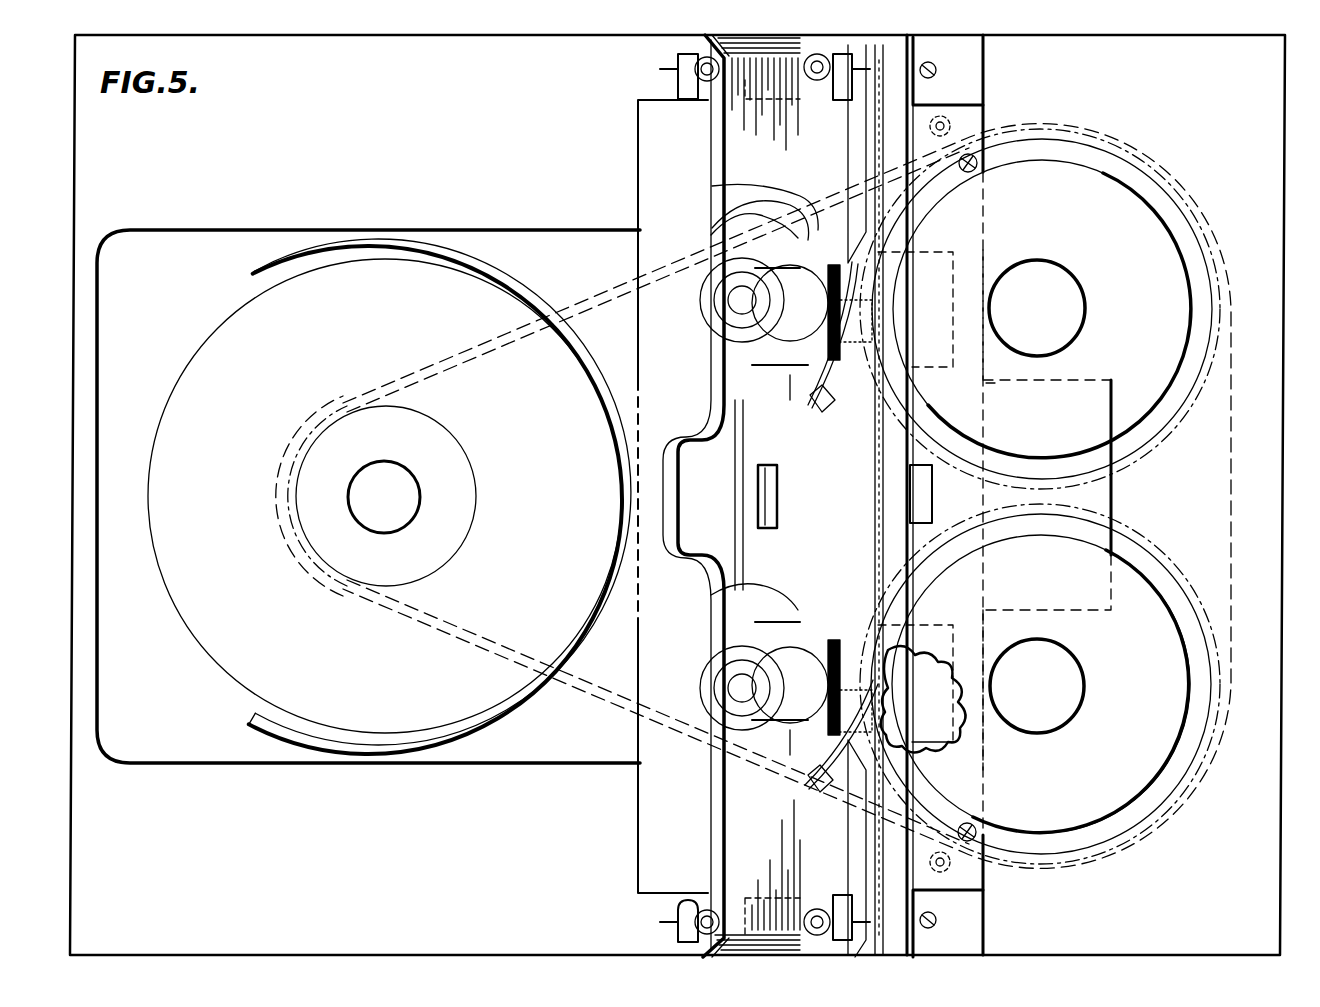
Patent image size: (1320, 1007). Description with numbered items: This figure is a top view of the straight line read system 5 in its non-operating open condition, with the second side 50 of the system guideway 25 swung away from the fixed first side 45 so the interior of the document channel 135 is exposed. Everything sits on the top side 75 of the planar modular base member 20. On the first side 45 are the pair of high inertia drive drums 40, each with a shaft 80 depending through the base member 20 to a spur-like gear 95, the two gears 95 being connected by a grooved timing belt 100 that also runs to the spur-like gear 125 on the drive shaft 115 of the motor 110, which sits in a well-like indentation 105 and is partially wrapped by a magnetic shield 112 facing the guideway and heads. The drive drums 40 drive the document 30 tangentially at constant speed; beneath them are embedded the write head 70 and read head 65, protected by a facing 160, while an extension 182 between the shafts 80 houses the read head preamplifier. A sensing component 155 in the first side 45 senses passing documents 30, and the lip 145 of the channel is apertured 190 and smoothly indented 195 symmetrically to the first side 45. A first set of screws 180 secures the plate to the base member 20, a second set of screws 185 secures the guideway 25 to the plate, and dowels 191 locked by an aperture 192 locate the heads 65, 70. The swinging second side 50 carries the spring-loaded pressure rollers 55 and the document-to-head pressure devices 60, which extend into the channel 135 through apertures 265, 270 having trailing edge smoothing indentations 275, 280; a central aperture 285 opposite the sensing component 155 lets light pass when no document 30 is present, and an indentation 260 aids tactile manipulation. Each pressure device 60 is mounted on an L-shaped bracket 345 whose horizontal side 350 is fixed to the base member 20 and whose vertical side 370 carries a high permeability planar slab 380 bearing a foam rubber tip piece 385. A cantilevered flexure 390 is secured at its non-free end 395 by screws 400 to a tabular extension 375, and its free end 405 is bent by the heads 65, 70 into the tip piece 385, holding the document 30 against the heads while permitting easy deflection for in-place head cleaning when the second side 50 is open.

The straight line read system 5 is at (1305, 170).
The base member 20 is at (1287, 100).
The system guideway 25 is at (868, 162).
The document 30 is at (922, 82).
The drive drums 40 is at (1161, 341).
The first side 45 is at (945, 570).
The second side 50 is at (668, 790).
The pressure rollers 55 is at (700, 342).
The document-to-head pressure devices 60 is at (826, 208).
The read head 65 is at (968, 642).
The write head 70 is at (962, 258).
The top side 75 is at (1207, 99).
The shaft 80 is at (1043, 312).
The spur-like gear 95 is at (1162, 196).
The timing belt 100 is at (1228, 270).
The well-like indentation 105 is at (101, 305).
The motor 110 is at (354, 324).
The magnetic shield 112 is at (252, 280).
The drive shaft 115 is at (398, 506).
The spur-like gear 125 is at (332, 498).
The document channel 135 is at (895, 135).
The lip 145 is at (866, 886).
The sensing component 155 is at (912, 500).
The facing 160 is at (900, 298).
The first set of screws 180 is at (934, 62).
The extension 182 is at (1112, 493).
The second set of screws 185 is at (975, 172).
The aperture 190 is at (880, 275).
The dowels 191 is at (975, 130).
The aperture 192 is at (950, 128).
The smooth indentation 195 is at (885, 250).
The indentation 260 is at (660, 496).
The apertures 265 is at (742, 300).
The apertures 270 is at (804, 392).
The smoothing indentations 275 is at (752, 262).
The smoothing indentations 280 is at (711, 216).
The aperture 285 is at (758, 498).
The L-shaped bracket 345 is at (880, 380).
The horizontal side 350 is at (730, 200).
The vertical side 370 is at (834, 330).
The tabular extension 375 is at (808, 420).
The planar slab 380 is at (740, 178).
The tip piece 385 is at (872, 322).
The cantilevered flexure 390 is at (870, 372).
The non-free end 395 is at (812, 410).
The screws 400 is at (812, 412).
The free end 405 is at (878, 290).